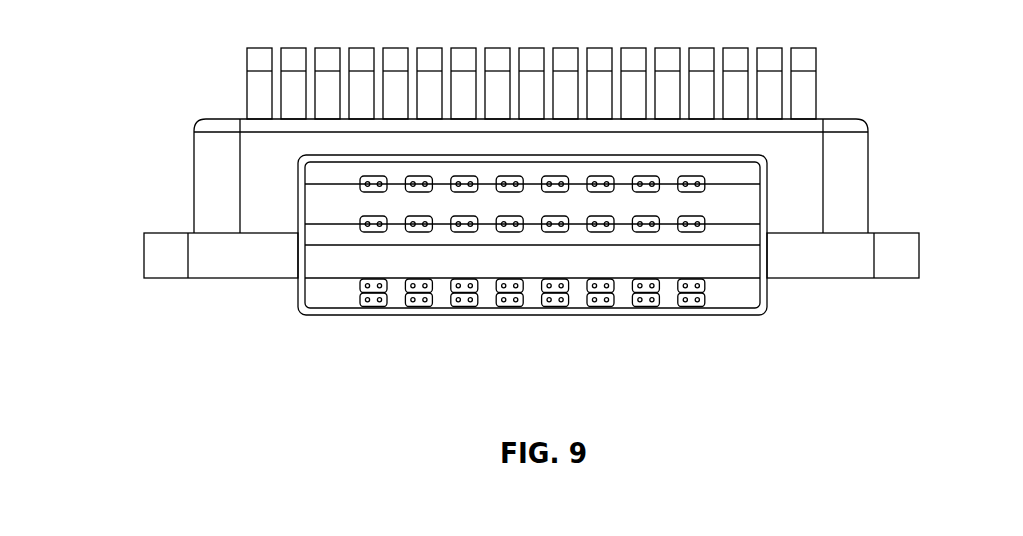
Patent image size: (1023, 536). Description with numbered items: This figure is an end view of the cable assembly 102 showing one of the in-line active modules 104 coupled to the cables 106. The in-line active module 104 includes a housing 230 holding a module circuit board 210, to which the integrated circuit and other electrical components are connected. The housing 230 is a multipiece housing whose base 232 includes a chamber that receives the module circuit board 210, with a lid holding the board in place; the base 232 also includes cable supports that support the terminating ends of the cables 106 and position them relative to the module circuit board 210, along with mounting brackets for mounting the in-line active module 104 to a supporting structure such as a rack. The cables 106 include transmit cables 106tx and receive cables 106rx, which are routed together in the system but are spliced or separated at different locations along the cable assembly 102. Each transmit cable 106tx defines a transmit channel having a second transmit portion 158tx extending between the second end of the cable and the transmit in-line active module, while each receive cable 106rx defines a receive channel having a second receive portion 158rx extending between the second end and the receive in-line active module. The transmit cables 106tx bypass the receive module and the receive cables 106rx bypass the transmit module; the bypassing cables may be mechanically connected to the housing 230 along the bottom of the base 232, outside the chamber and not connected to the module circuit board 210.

The cable assembly 102 is at (562, 214).
The in-line active module 104 is at (545, 214).
The cables 106 is at (562, 194).
The transmit cables 106tx is at (562, 215).
The receive cables 106rx is at (534, 332).
The second transmit portion 158tx is at (366, 224).
The second receive portion 158rx is at (361, 302).
The module circuit board 210 is at (748, 205).
The housing 230 is at (169, 169).
The base 232 is at (818, 258).